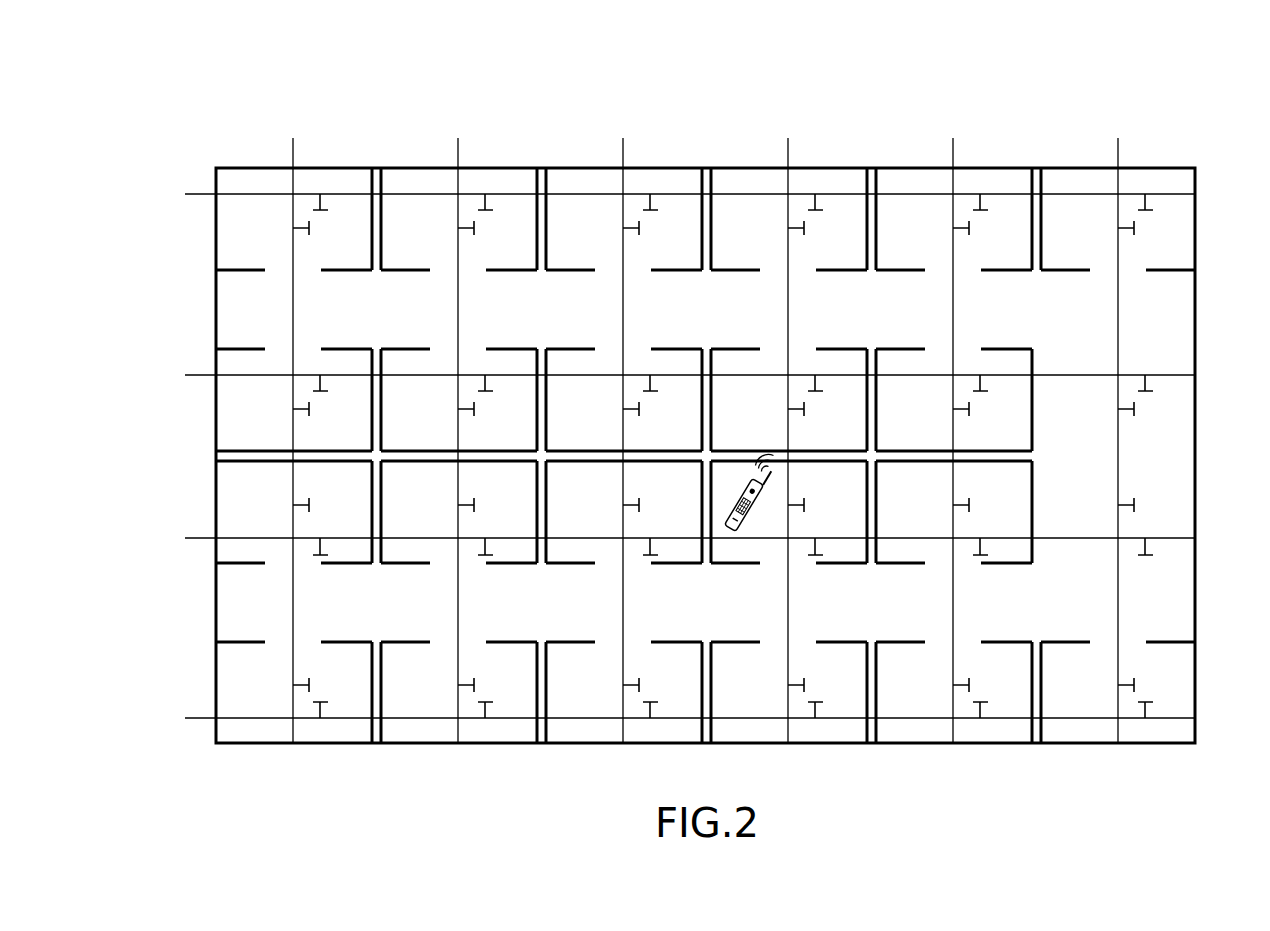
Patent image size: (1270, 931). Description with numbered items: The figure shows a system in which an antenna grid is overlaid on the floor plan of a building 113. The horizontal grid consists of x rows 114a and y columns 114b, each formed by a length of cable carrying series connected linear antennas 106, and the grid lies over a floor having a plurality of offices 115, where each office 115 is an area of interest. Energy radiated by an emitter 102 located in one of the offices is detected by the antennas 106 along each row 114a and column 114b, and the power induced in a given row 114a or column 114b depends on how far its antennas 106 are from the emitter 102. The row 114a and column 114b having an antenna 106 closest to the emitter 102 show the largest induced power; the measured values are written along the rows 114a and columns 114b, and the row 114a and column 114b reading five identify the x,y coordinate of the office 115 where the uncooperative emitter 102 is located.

The building 113 is at (218, 119).
The office 115 is at (252, 222).
The row 114a is at (1145, 194).
The column 114b is at (293, 702).
The linear antenna 106 is at (488, 392).
The emitter 102 is at (737, 487).